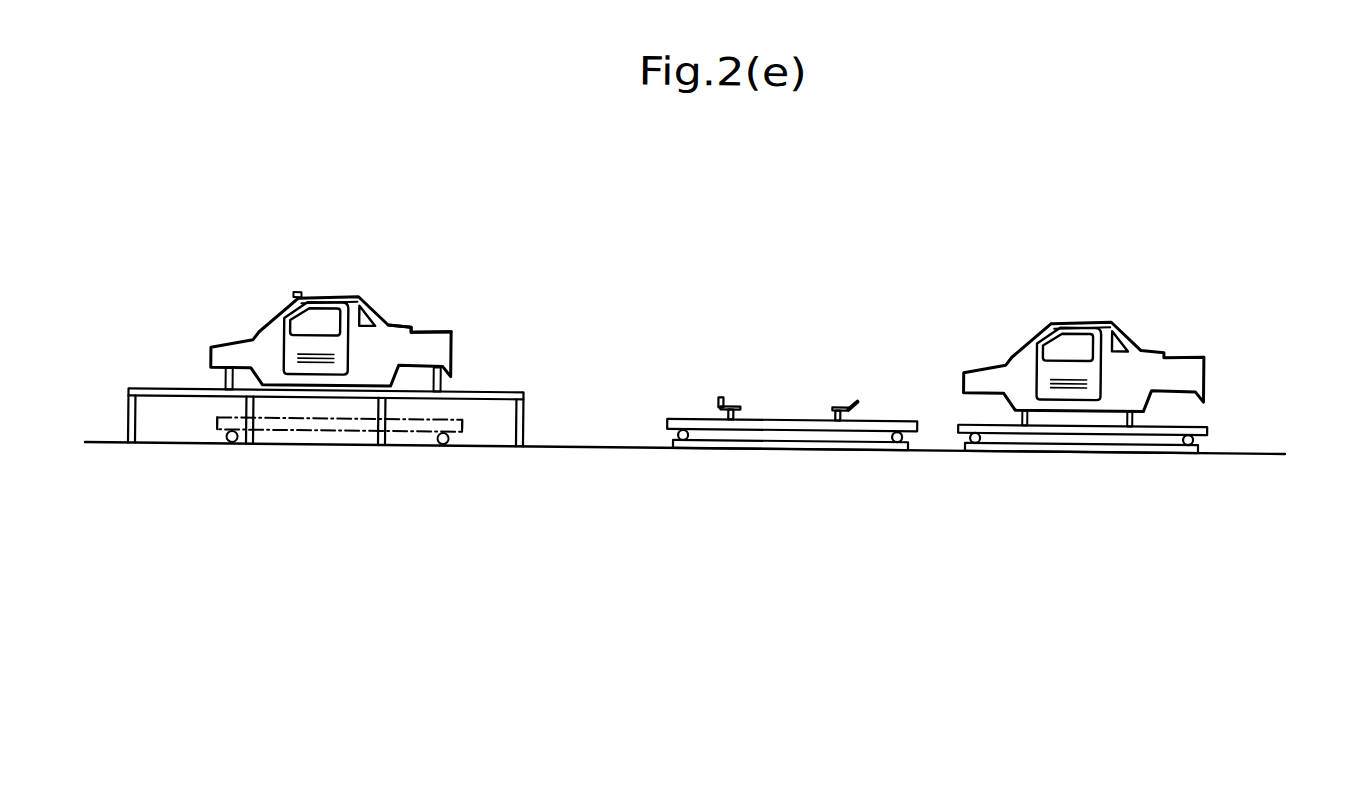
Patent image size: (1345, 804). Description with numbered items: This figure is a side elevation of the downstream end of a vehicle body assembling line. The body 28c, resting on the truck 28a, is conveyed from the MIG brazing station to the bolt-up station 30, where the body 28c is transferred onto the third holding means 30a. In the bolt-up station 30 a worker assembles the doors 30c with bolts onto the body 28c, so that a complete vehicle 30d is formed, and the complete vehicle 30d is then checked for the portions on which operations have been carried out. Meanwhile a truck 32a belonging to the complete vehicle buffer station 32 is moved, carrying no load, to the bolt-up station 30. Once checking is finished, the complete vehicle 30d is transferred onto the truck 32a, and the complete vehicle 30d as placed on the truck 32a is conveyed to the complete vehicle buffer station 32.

The bolt-up station 30 is at (369, 436).
The third holding means 30a is at (497, 386).
The doors 30c is at (294, 292).
The complete vehicle 30d is at (370, 272).
The truck 28a is at (327, 428).
The body 28c is at (397, 322).
The complete vehicle buffer station 32 is at (937, 470).
The truck 32a is at (893, 412).